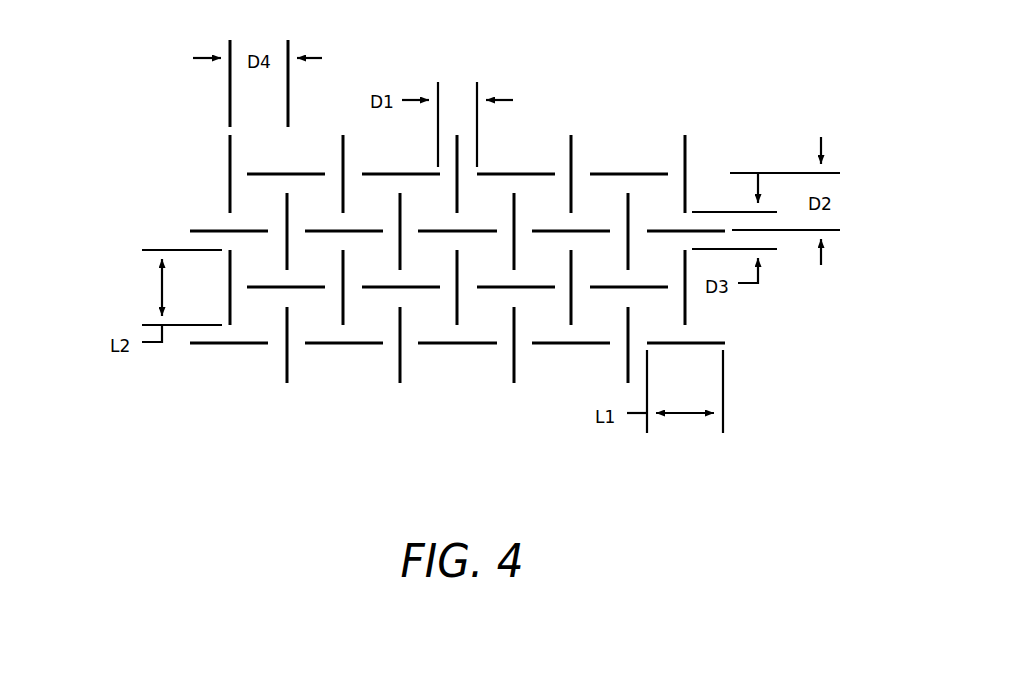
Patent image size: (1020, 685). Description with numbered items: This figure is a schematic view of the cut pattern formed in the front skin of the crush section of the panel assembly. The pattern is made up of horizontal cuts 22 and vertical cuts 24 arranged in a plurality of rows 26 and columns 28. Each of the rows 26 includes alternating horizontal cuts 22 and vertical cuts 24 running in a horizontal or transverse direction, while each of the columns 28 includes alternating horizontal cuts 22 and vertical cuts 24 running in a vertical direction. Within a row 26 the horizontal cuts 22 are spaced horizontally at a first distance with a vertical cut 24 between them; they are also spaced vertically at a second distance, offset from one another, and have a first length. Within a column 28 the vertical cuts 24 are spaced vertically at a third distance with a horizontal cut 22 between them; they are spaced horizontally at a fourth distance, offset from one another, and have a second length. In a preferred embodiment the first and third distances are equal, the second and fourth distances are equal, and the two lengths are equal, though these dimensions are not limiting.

The horizontal cuts 22 is at (514, 173).
The vertical cuts 24 is at (230, 152).
The rows 26 is at (195, 175).
The columns 28 is at (628, 143).